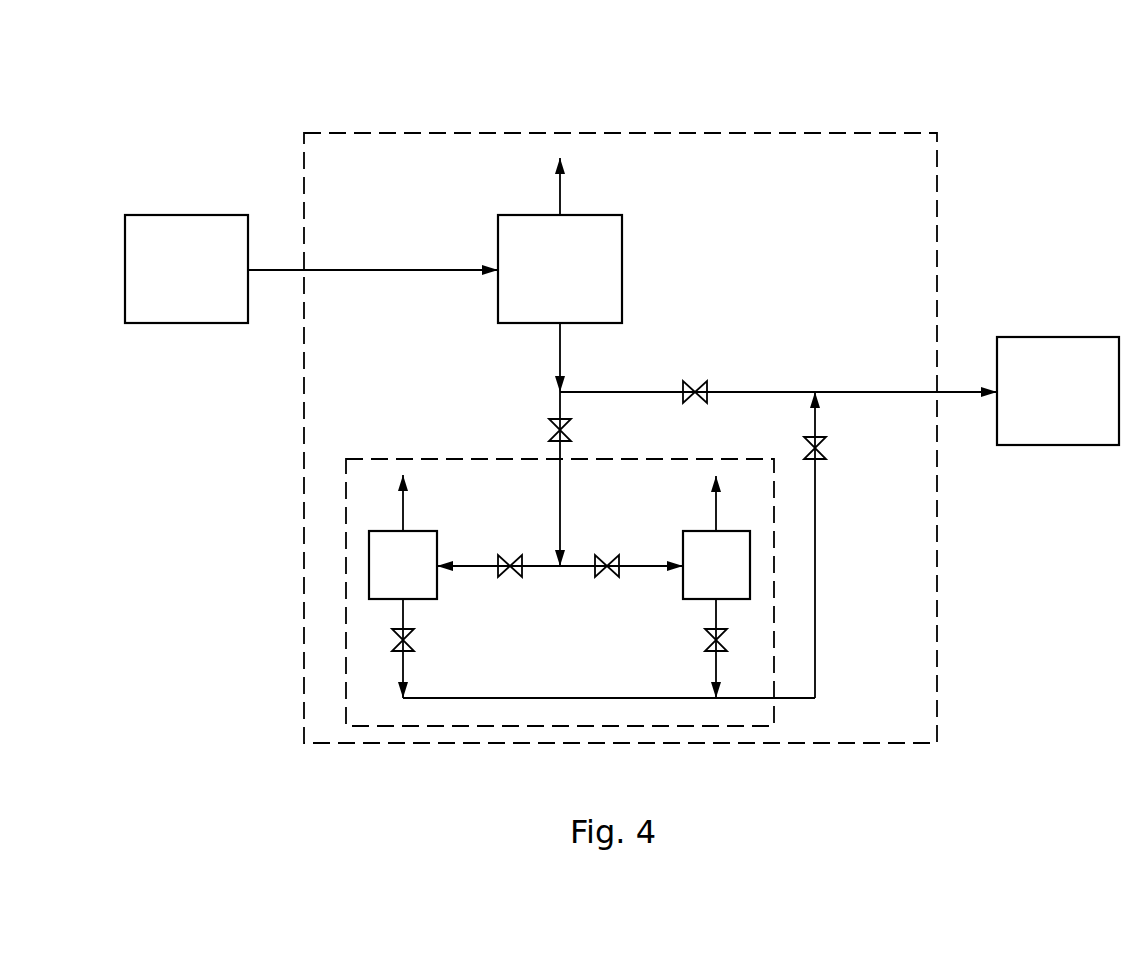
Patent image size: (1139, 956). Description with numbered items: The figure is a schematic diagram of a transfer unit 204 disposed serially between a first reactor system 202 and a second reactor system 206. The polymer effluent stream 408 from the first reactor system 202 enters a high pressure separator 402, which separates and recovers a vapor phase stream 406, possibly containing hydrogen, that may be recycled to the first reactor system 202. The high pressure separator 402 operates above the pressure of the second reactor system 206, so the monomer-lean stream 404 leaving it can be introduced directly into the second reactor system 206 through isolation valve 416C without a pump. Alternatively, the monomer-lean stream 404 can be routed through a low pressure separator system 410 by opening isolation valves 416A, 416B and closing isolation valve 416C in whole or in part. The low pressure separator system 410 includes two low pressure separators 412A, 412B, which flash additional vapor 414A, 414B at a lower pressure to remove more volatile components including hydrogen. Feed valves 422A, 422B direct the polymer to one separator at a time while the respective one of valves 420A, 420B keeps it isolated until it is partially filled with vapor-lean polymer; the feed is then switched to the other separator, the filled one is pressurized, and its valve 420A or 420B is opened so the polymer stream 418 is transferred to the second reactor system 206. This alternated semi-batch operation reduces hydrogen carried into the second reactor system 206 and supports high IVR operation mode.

The first reactor system 202 is at (207, 214).
The transfer unit 204 is at (427, 133).
The second reactor system 206 is at (1027, 337).
The high pressure separator 402 is at (622, 258).
The monomer-lean stream 404 is at (560, 348).
The vapor phase stream 406 is at (560, 192).
The polymer effluent stream 408 is at (427, 270).
The low pressure separator system 410 is at (403, 458).
The low pressure separator 412A is at (437, 540).
The low pressure separator 412B is at (683, 540).
The additional vapor 414A is at (405, 503).
The additional vapor 414B is at (714, 503).
The isolation valve 416A is at (548, 428).
The isolation valve 416B is at (822, 445).
The isolation valve 416C is at (695, 380).
The polymer stream 418 is at (815, 615).
The valve 420A is at (415, 640).
The valve 420B is at (706, 640).
The valve 422A is at (510, 577).
The valve 422B is at (607, 578).